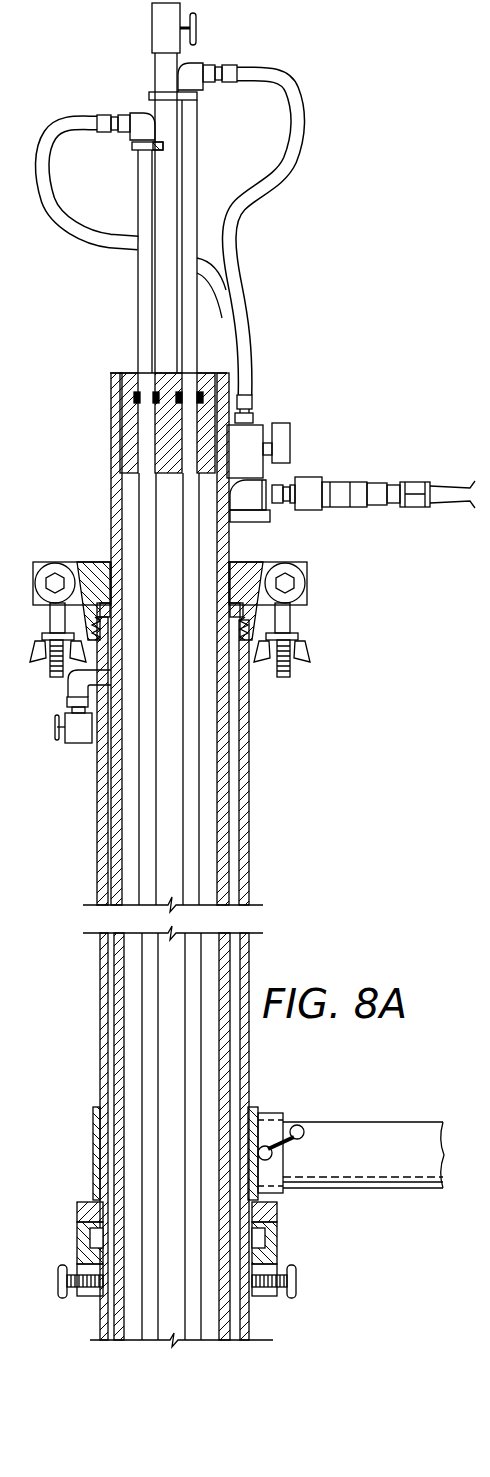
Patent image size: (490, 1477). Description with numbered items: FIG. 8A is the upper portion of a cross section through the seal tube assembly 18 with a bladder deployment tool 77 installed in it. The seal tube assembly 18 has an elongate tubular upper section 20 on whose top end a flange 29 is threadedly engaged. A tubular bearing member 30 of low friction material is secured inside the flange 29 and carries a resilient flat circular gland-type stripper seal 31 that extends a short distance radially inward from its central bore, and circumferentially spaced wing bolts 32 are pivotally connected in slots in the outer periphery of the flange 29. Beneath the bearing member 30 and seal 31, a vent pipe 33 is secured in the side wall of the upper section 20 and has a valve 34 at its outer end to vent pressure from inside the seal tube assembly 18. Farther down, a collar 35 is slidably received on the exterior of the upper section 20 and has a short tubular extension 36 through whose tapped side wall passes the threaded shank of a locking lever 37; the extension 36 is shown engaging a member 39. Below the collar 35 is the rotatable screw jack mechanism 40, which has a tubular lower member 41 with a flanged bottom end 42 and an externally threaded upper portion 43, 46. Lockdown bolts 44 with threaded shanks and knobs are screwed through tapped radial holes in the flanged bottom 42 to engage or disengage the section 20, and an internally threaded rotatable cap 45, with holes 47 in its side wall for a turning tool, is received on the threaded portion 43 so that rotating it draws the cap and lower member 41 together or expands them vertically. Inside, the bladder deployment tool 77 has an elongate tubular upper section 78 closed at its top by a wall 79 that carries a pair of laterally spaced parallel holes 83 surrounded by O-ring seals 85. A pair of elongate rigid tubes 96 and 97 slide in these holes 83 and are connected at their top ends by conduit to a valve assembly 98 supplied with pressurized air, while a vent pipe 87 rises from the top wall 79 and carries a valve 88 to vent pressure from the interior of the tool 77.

The valve 88 is at (152, 27).
The vent pipe 87 is at (155, 67).
The rigid tube 97 is at (197, 118).
The rigid tube 96 is at (138, 187).
The wall 79 is at (121, 373).
The holes 83 is at (188, 446).
The O-ring seals 85 is at (135, 398).
The valve assembly 98 is at (250, 432).
The bladder deployment tool 77 is at (103, 512).
The tubular bearing member 30 is at (80, 562).
The flange 29 is at (243, 562).
The stripper seal 31 is at (243, 609).
The wing bolts 32 is at (52, 677).
The vent pipe 33 is at (70, 692).
The valve 34 is at (80, 743).
The tubular upper section 78 is at (229, 725).
The tubular upper section 20 is at (249, 862).
The seal tube assembly 18 is at (262, 828).
The collar 35 is at (93, 1127).
The tubular extension 36 is at (272, 1113).
The rail 39 is at (397, 1122).
The locking lever 37 is at (273, 1153).
The holes 47 is at (80, 1220).
The rotatable cap 45 is at (80, 1242).
The threaded upper portion 43 is at (272, 1250).
The clamp insert 46 is at (258, 1238).
The lockdown bolts 44 is at (58, 1287).
The flanged bottom end 42 is at (85, 1292).
The tubular lower member 41 is at (262, 1296).
The screw jack mechanism 40 is at (318, 1268).